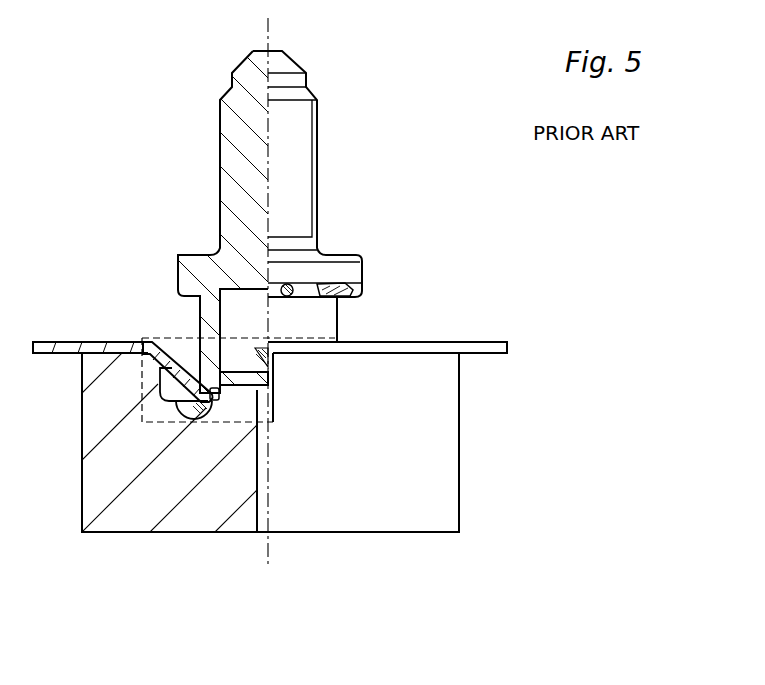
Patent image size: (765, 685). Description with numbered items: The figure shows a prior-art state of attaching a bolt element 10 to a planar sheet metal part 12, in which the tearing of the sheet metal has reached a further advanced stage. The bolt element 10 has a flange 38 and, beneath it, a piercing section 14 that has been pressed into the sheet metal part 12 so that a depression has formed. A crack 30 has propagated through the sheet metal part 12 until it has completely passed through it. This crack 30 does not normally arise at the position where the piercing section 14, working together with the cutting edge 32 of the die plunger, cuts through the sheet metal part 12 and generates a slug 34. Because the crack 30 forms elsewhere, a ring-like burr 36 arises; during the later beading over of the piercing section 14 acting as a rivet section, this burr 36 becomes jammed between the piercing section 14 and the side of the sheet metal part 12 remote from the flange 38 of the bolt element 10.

The bolt element 10 is at (378, 107).
The sheet metal part 12 is at (50, 340).
The piercing section 14 is at (182, 345).
The crack 30 is at (197, 414).
The cutting edge 32 is at (228, 397).
The slug 34 is at (268, 348).
The ring-like burr 36 is at (218, 417).
The flange 38 is at (175, 253).